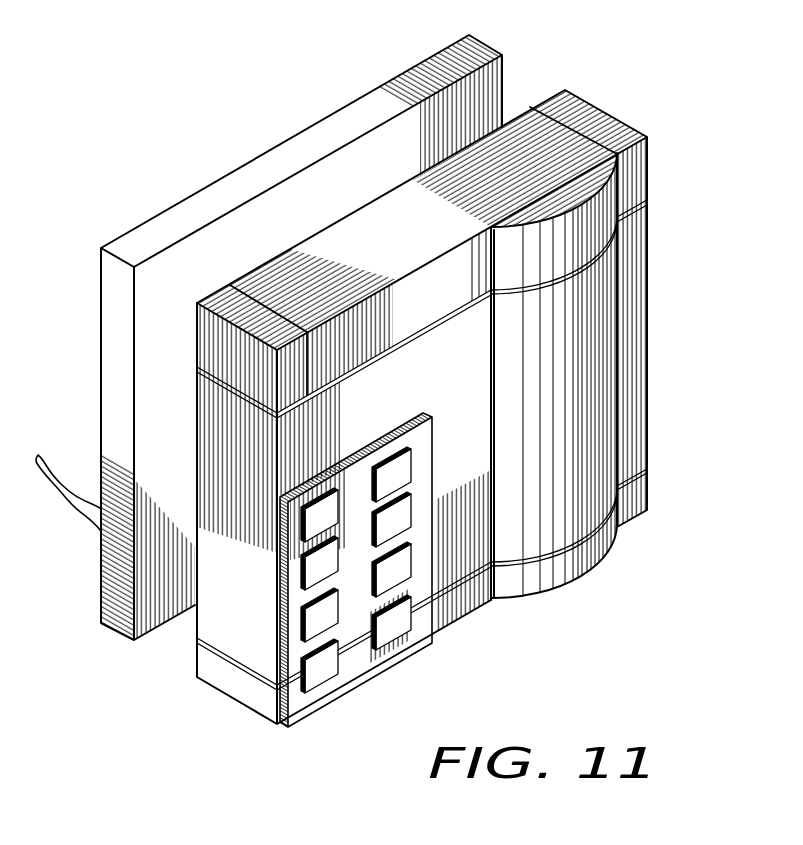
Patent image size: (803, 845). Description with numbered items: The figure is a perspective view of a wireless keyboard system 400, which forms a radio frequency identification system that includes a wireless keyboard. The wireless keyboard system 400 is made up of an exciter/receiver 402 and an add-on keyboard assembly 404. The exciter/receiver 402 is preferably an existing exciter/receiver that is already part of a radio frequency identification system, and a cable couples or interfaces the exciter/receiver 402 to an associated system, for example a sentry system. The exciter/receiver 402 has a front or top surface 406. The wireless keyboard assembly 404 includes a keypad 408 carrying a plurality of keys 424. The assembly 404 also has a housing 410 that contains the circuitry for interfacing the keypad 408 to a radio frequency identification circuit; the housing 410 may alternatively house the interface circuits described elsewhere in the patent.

The wireless keyboard system 400 is at (380, 392).
The exciter/receiver 402 is at (431, 78).
The add-on keyboard assembly 404 is at (633, 452).
The front or top surface 406 is at (335, 201).
The keypad 408 is at (298, 707).
The housing 410 is at (415, 394).
The keys 424 is at (392, 630).